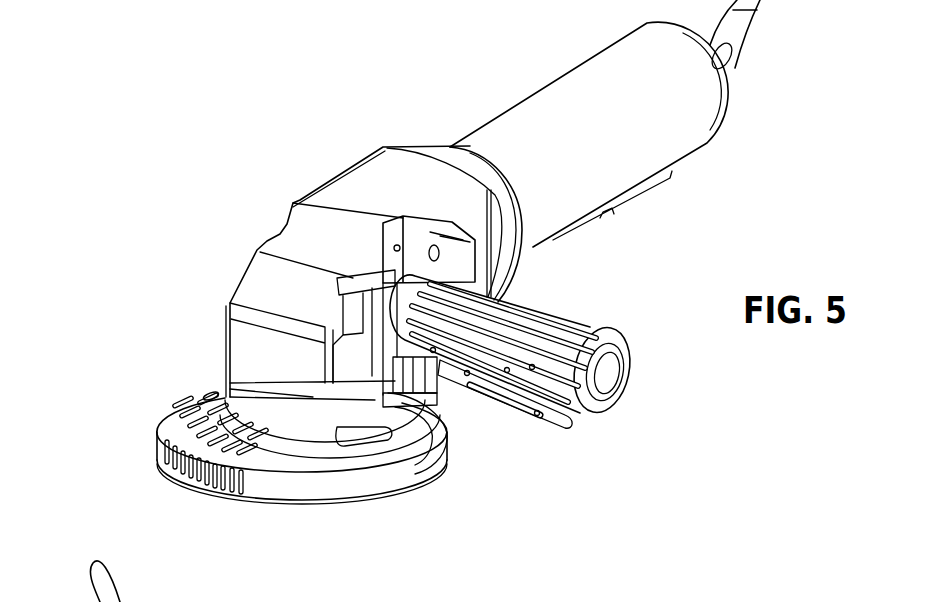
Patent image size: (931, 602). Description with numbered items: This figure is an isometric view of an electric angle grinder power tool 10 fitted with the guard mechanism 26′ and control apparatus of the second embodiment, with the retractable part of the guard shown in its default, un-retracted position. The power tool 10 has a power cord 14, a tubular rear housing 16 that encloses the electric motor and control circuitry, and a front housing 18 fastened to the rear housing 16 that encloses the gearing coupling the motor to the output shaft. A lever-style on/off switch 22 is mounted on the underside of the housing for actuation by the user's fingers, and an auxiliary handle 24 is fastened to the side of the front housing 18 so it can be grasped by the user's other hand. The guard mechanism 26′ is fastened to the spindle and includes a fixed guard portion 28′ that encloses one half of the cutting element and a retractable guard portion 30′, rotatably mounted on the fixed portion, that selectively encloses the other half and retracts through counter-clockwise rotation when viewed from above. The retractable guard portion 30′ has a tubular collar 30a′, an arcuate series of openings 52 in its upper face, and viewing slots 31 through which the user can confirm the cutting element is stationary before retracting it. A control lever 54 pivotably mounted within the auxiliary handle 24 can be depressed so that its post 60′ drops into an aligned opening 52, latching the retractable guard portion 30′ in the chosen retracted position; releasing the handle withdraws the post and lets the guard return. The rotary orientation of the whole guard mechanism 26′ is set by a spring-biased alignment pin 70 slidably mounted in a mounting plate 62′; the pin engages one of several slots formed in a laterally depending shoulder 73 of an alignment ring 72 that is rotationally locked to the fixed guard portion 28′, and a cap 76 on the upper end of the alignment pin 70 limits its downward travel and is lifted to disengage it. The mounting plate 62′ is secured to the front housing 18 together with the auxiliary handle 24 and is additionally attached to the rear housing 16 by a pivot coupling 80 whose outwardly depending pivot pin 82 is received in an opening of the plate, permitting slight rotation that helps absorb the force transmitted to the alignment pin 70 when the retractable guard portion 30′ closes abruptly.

The power tool 10 is at (390, 48).
The power cord 14 is at (745, 30).
The rear housing 16 is at (599, 68).
The front housing 18 is at (262, 292).
The on/off switch 22 is at (613, 214).
The auxiliary handle 24 is at (607, 343).
The guard mechanism 26′ is at (105, 405).
The fixed guard portion 28′ is at (433, 460).
The retractable guard portion 30′ is at (340, 487).
The collar 30a′ is at (302, 413).
The viewing slots 31 is at (230, 477).
The openings 52 is at (208, 392).
The control lever 54 is at (574, 437).
The post 60′ is at (423, 398).
The mounting plate 62′ is at (463, 240).
The alignment pin 70 is at (446, 432).
The alignment ring 72 is at (262, 388).
The shoulder 73 is at (350, 402).
The cap 76 is at (357, 277).
The pivot coupling 80 is at (410, 218).
The pivot pin 82 is at (412, 220).